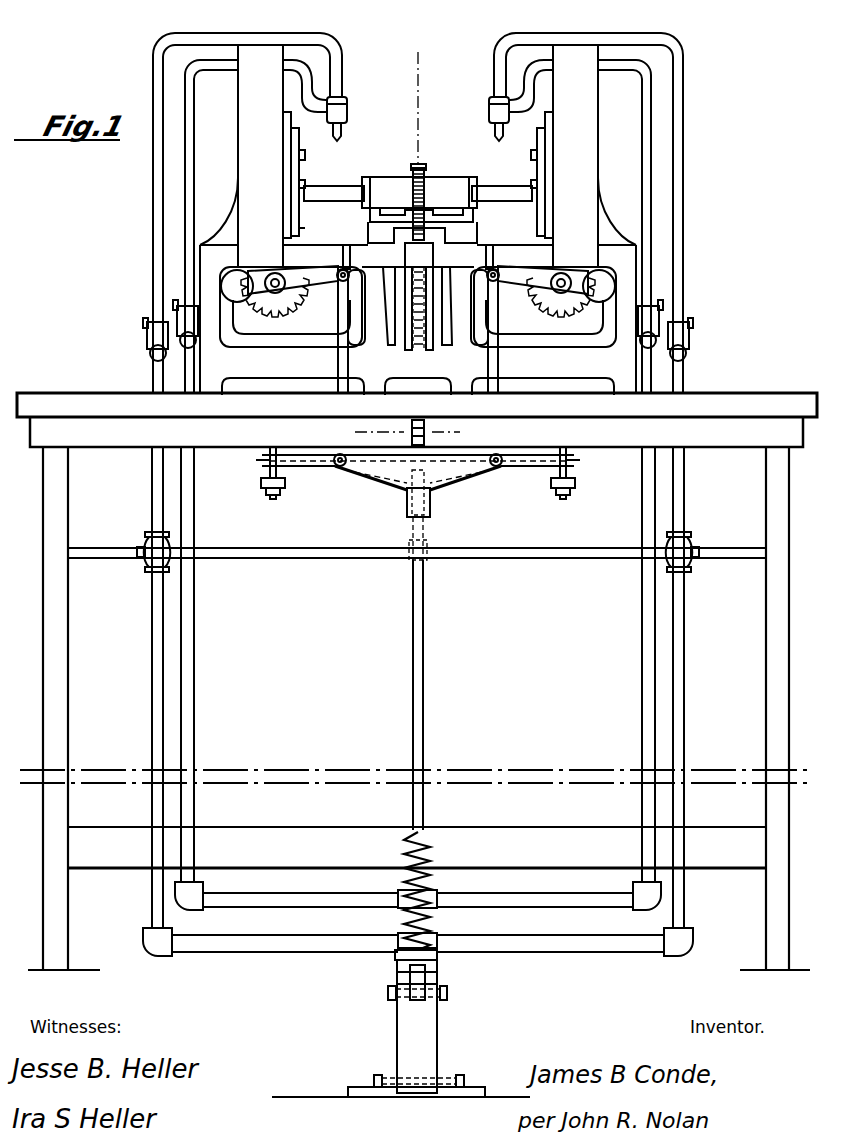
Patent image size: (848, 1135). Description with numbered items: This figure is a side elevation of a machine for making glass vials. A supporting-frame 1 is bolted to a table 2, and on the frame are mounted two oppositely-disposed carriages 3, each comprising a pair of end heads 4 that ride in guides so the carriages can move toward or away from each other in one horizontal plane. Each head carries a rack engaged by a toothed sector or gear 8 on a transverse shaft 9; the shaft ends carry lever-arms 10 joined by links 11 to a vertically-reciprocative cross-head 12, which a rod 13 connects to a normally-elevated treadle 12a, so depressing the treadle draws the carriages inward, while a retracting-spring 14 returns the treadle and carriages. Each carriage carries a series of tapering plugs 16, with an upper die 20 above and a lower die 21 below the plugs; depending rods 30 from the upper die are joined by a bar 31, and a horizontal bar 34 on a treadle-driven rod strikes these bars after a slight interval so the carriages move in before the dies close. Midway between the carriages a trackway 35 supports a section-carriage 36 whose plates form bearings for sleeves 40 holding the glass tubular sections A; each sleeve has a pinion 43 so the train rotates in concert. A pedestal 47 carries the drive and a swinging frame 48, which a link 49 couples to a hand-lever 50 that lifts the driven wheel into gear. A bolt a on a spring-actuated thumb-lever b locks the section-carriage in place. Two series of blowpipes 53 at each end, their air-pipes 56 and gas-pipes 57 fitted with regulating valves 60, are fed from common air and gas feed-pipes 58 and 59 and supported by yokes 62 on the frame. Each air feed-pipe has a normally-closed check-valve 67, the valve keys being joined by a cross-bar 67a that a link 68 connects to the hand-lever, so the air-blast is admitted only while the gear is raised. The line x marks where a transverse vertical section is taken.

The supporting-frame 1 is at (632, 258).
The table 2 is at (768, 410).
The carriage 3 is at (200, 217).
The end head 4 is at (228, 205).
The toothed sector or gear 8 is at (273, 318).
The transverse shaft 9 is at (273, 278).
The lever-arm 10 is at (312, 273).
The link 11 is at (348, 366).
The cross-head 12 is at (460, 476).
The treadle 12a is at (425, 1018).
The rod 13 is at (425, 678).
The retracting-spring 14 is at (432, 855).
The tapering plug 16 is at (304, 190).
The upper die 20 is at (304, 166).
The lower die 21 is at (303, 232).
The depending rod 30 is at (280, 470).
The bar 31 is at (262, 488).
The horizontal bar 34 is at (345, 466).
The trackway 35 is at (477, 238).
The carriage 36 is at (473, 216).
The sleeve 40 is at (388, 180).
The pinion 43 is at (420, 168).
The pedestal 47 is at (440, 340).
The swinging frame 48 is at (433, 252).
The link 49 is at (416, 350).
The hand-lever 50 is at (426, 432).
The blowpipe 53 is at (346, 130).
The air-pipe 56 is at (344, 78).
The gas-pipe 57 is at (190, 108).
The air feed-pipe 58 is at (152, 492).
The gas feed-pipe 59 is at (194, 608).
The valve 60 is at (143, 325).
The yoke 62 is at (418, 156).
The check-valve 67 is at (152, 550).
The cross-bar 67a is at (512, 556).
The link 68 is at (413, 556).
The glass tubular section A is at (494, 188).
The bolt a is at (378, 240).
The thumb-lever b is at (418, 307).
The section line x x is at (392, 235).